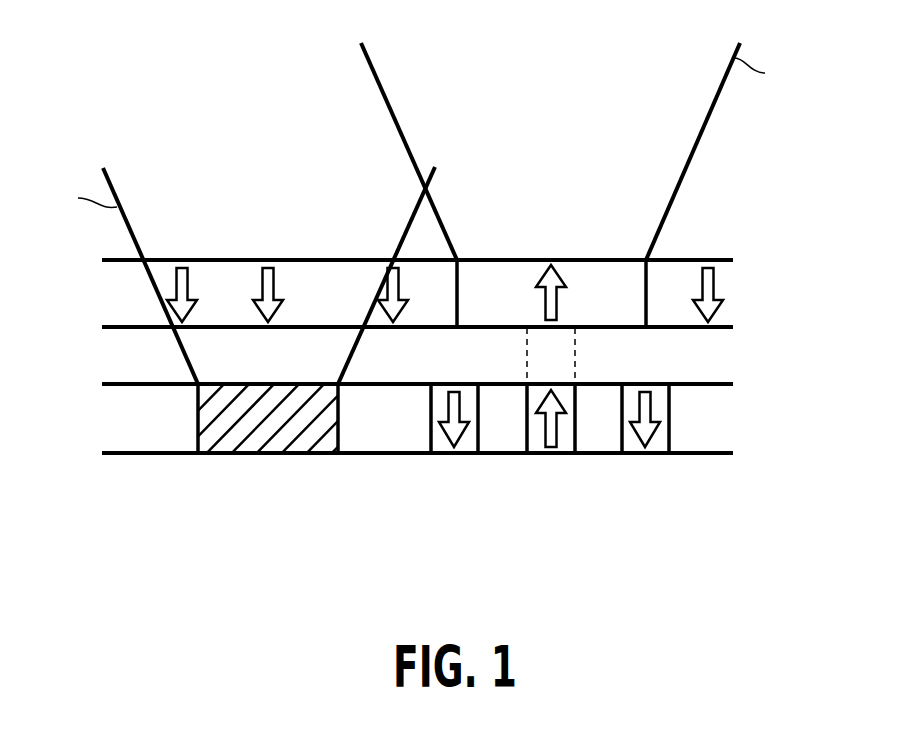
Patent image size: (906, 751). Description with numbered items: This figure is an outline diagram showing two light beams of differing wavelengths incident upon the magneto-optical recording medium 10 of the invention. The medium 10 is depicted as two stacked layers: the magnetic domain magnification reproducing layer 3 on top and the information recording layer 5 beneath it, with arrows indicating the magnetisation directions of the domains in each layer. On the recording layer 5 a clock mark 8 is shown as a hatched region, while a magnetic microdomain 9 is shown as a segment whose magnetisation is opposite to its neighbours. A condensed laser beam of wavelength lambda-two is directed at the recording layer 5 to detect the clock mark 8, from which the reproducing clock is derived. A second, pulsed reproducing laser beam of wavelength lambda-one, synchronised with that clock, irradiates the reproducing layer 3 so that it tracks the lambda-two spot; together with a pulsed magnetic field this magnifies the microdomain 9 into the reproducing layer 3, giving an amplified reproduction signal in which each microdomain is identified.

The magnetic domain magnification reproducing layer 3 is at (717, 280).
The information recording layer 5 is at (437, 426).
The clock mark 8 is at (253, 455).
The magnetic microdomain 9 is at (552, 455).
The magneto-optical recording medium 10 is at (423, 283).